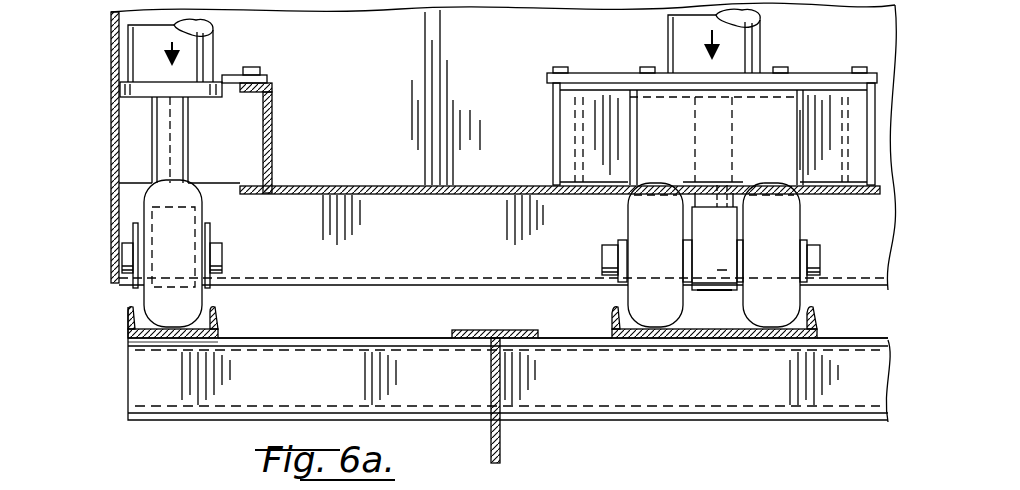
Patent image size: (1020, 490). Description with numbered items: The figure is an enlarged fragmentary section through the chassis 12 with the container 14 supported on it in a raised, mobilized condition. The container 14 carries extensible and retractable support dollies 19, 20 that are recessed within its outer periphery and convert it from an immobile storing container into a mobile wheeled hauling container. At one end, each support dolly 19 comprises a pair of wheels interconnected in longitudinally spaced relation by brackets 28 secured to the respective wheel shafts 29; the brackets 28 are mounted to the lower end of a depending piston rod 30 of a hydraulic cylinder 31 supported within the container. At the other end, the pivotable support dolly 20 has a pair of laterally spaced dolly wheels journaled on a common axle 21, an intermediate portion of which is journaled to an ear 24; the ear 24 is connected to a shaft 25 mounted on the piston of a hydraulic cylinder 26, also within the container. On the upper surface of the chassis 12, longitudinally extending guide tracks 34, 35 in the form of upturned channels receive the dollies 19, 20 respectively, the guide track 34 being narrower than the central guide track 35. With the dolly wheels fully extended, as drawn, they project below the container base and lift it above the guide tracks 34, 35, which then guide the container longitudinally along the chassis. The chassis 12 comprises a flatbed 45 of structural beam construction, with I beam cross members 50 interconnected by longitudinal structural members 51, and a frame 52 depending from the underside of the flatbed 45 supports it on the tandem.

The chassis flatbed 12 is at (150, 422).
The container 14 is at (112, 135).
The support dolly 19 is at (204, 306).
The pivotable support dolly 20 is at (628, 230).
The common axle 21 is at (688, 265).
The ear 24 is at (722, 291).
The shaft 25 is at (697, 150).
The hydraulic cylinder 26 is at (668, 52).
The brackets 28 is at (130, 232).
The wheel shafts 29 is at (224, 256).
The depending piston rod 30 is at (190, 140).
The hydraulic cylinder 31 is at (213, 50).
The guide track 34 is at (145, 305).
The central guide track 35 is at (624, 312).
The flatbed 45 is at (322, 338).
The I beam cross members 50 is at (308, 389).
The longitudinal structural members 51 is at (160, 343).
The frame 52 is at (491, 390).